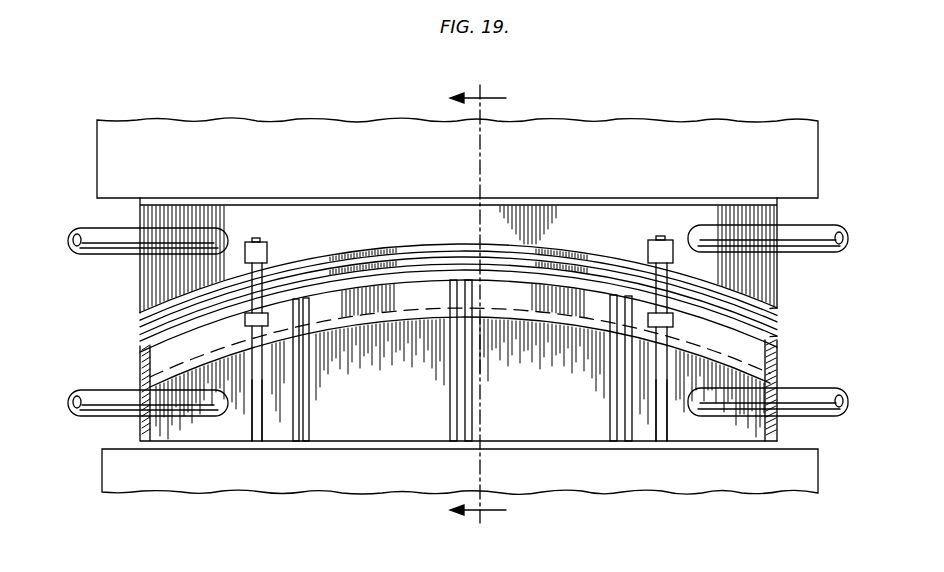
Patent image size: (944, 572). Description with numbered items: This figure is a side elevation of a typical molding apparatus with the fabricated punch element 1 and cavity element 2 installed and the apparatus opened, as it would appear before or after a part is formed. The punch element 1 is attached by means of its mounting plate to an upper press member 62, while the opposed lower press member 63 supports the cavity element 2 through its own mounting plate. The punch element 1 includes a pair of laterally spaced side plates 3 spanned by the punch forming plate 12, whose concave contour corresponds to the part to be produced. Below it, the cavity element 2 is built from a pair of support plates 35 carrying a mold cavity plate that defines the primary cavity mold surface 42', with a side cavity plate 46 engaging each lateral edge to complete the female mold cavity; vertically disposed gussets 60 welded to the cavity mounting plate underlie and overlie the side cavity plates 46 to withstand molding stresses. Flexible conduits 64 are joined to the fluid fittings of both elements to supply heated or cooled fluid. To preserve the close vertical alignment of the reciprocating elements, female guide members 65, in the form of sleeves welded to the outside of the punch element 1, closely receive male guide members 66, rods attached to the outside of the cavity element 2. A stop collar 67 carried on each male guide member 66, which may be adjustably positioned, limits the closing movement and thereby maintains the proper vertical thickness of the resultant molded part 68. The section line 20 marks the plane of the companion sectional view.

The punch element 1 is at (130, 278).
The cavity element 2 is at (138, 367).
The side plate 3 is at (758, 275).
The punch forming plate 12 is at (339, 246).
The section line 20- 20 is at (462, 306).
The support plate 35 is at (556, 391).
The primary cavity mold surface 42' is at (463, 261).
The side cavity plate 46 is at (418, 278).
The gusset 60 is at (308, 398).
The upper press member 62 is at (202, 130).
The lower press member 63 is at (433, 471).
The flexible conduit 64 is at (845, 251).
The female guide member 65 is at (268, 251).
The male guide member 66 is at (263, 427).
The stop collar 67 is at (245, 320).
The molded part 68 is at (776, 330).